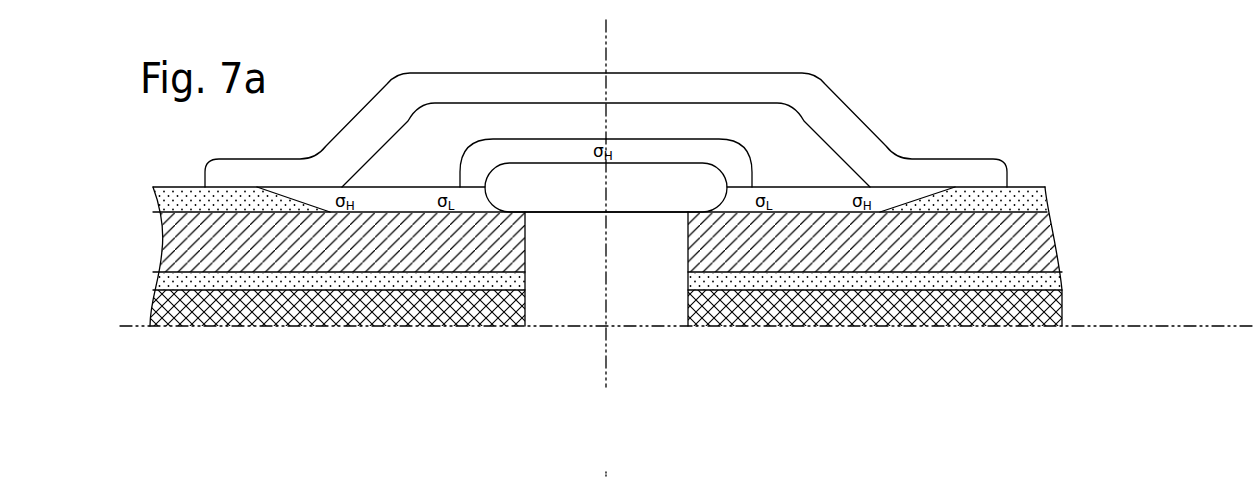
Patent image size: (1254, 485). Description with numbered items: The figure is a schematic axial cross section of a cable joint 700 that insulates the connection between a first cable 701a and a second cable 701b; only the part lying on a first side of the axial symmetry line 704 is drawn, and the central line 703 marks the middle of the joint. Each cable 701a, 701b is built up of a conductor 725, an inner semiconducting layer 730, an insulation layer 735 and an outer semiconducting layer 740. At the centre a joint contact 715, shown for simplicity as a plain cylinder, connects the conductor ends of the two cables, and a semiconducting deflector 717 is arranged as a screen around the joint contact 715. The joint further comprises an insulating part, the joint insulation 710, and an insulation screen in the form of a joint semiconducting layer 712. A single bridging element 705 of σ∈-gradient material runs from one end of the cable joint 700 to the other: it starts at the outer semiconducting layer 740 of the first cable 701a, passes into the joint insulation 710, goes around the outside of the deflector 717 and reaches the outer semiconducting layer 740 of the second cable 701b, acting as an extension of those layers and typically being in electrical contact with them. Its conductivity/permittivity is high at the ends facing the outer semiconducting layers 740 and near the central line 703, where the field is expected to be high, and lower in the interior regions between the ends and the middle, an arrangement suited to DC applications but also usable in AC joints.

The cable joint 700 is at (883, 147).
The first cable 701a is at (207, 330).
The second cable 701b is at (992, 330).
The central line 703 is at (606, 50).
The axial symmetry line 704 is at (1237, 326).
The bridging element 705 is at (787, 186).
The joint insulation 710 is at (516, 156).
The joint semiconducting layer 712 is at (537, 130).
The joint contact 715 is at (606, 269).
The semiconducting deflector 717 is at (606, 187).
The conductor 725 is at (1063, 303).
The inner semiconducting layer 730 is at (1063, 282).
The insulation layer 735 is at (1053, 233).
The outer semiconducting layer 740 is at (1048, 200).